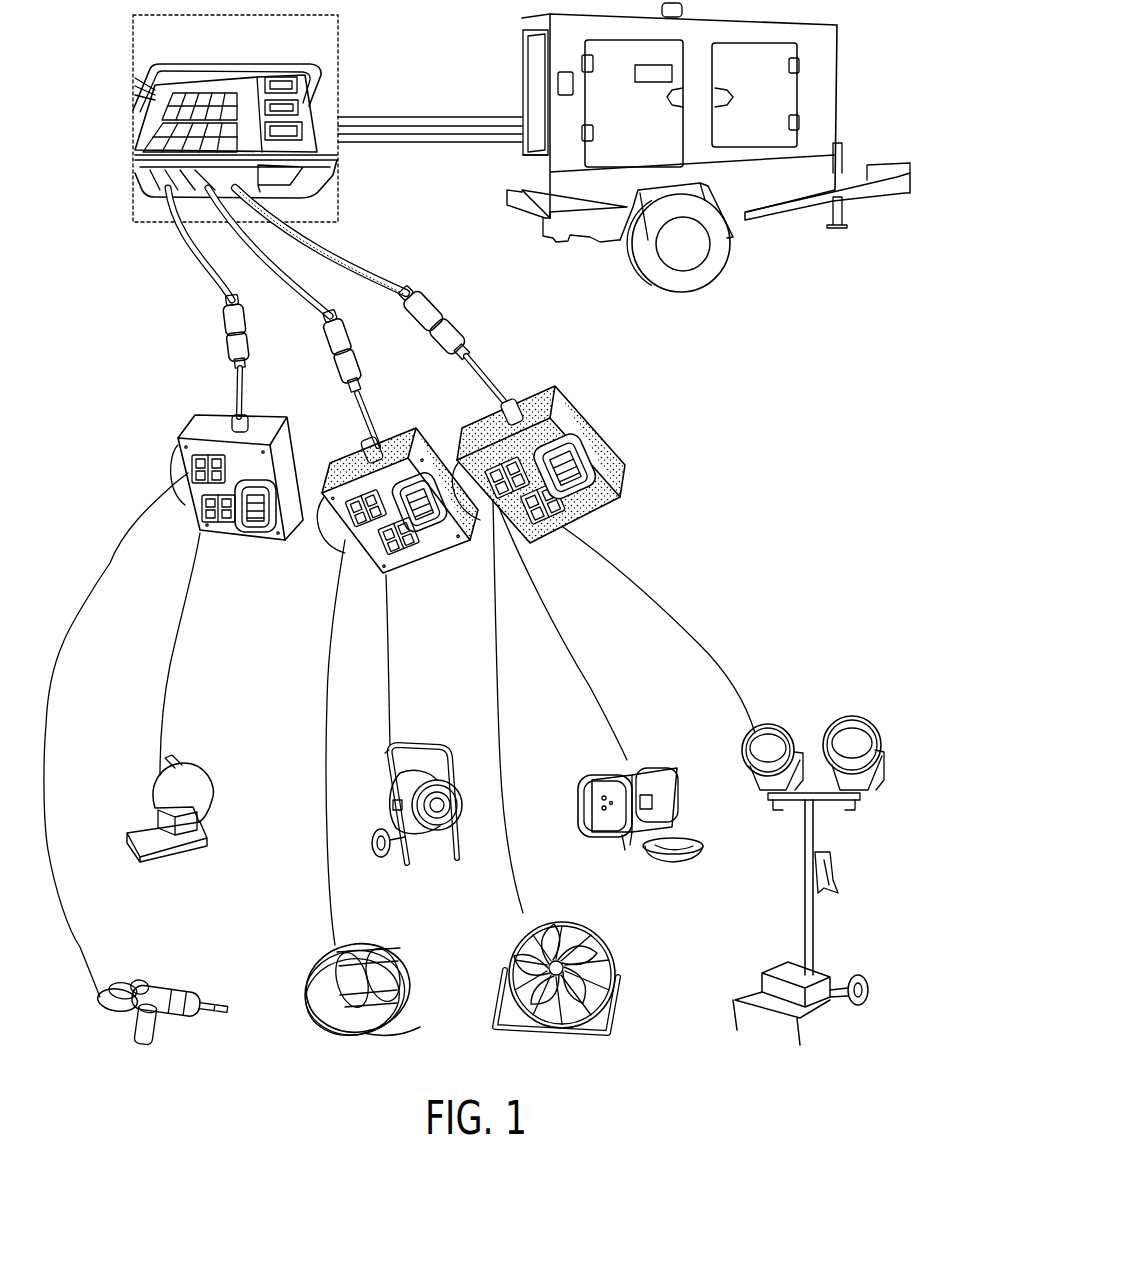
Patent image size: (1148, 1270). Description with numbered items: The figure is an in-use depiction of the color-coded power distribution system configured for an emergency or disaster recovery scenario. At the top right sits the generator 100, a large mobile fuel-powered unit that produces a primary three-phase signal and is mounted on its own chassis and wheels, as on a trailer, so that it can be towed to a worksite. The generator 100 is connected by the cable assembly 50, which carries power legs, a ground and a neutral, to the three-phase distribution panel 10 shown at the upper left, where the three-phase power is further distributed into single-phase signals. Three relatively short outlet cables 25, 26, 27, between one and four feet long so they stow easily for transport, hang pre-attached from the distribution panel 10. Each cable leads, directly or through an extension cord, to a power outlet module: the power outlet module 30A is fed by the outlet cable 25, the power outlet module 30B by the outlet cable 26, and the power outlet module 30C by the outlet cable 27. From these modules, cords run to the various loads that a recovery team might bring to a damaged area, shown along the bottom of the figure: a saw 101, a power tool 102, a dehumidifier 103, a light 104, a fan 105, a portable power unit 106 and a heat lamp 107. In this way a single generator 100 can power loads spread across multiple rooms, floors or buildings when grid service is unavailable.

The three-phase distribution panel 10 is at (339, 55).
The cable assembly 50 is at (431, 110).
The generator 100 is at (838, 58).
The outlet cable 25 is at (350, 256).
The outlet cable 26 is at (298, 273).
The outlet cable 27 is at (212, 255).
The power outlet module 30A is at (580, 418).
The power outlet module 30B is at (403, 445).
The power outlet module 30C is at (206, 422).
The saw 101 is at (200, 768).
The power tool 102 is at (134, 985).
The dehumidifier 103 is at (415, 748).
The light 104 is at (344, 946).
The fan 105 is at (543, 920).
The portable power unit 106 is at (646, 770).
The heat lamp 107 is at (895, 760).